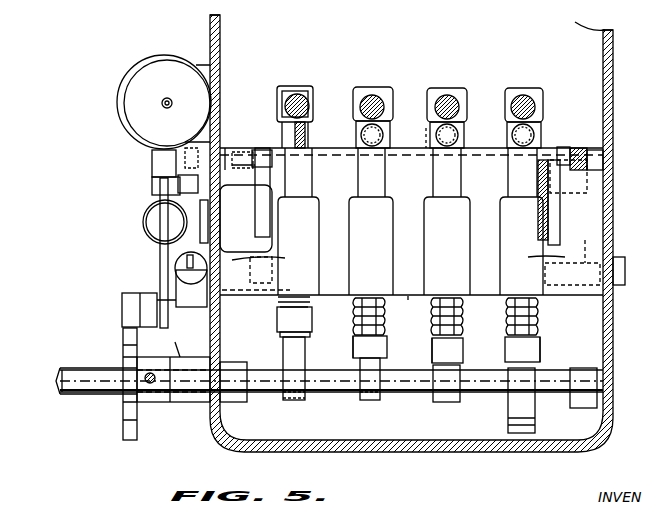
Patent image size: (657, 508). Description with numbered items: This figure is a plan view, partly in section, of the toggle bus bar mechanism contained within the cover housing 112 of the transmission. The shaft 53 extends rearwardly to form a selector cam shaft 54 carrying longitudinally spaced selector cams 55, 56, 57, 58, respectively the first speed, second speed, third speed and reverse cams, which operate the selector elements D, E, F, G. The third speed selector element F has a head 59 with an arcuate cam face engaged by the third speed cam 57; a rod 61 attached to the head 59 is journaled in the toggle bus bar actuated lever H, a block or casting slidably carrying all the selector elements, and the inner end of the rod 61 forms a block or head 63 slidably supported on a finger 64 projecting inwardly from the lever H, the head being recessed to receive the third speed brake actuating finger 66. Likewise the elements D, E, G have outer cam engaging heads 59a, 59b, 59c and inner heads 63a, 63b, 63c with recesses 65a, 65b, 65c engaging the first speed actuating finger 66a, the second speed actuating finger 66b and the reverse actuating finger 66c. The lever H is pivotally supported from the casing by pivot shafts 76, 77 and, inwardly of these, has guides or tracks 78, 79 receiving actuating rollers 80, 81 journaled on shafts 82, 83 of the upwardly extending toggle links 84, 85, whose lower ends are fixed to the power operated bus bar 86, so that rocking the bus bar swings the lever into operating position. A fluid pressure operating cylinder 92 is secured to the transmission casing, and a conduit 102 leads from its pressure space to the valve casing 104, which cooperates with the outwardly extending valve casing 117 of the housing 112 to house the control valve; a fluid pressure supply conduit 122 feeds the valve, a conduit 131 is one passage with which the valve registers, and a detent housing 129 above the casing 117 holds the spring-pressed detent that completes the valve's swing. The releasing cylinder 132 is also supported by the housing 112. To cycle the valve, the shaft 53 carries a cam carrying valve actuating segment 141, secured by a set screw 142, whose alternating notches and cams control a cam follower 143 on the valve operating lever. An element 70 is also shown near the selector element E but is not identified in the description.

The cover housing 112 is at (218, 17).
The fluid pressure operating cylinder 92 is at (118, 82).
The block or head 63 is at (290, 87).
The third speed brake actuating finger 66 is at (297, 96).
The finger 64 is at (318, 128).
The second speed actuating finger 66b is at (368, 100).
The inner block or head 63b is at (392, 100).
The recess 65b is at (362, 135).
The power operated bus bar 86 is at (413, 134).
The first speed actuating finger 66a is at (445, 100).
The inner block or head 63a is at (430, 108).
The recess 65a is at (450, 130).
The reverse actuating finger 66c is at (523, 100).
The inner block or head 63c is at (541, 122).
The recess 65c is at (532, 136).
The toggle bus bar actuated lever H is at (480, 170).
The toggle link 84 is at (580, 152).
The shaft 82 is at (614, 137).
The actuating roller 80 is at (540, 195).
The guide or track 78 is at (552, 212).
The pivot shaft 76 is at (585, 248).
The toggle link 85 is at (250, 165).
The rod 61 is at (270, 130).
The actuating roller 81 is at (243, 165).
The shaft 83 is at (262, 150).
The guide or track 79 is at (256, 200).
The pivot shaft 77 is at (240, 244).
The fluid pressure supply conduit 122 is at (290, 290).
The spring 70 is at (409, 300).
The third speed selector element F is at (312, 320).
The second speed selector element E is at (380, 328).
The first speed selector element D is at (460, 330).
The reverse selector element G is at (545, 335).
The head 59 is at (270, 322).
The outer cam engaging head 59b is at (353, 344).
The outer cam engaging head 59a is at (432, 348).
The outer cam engaging head 59c is at (540, 348).
The selector cam shaft 54 is at (410, 394).
The shaft 53 is at (80, 368).
The third speed cam 57 is at (294, 400).
The second speed cam 56 is at (368, 400).
The first speed cam 55 is at (443, 402).
The reverse cam 58 is at (536, 418).
The valve casing 104 is at (173, 372).
The valve casing 117 is at (189, 350).
The cam carrying valve actuating segment 141 is at (125, 422).
The set screw 142 is at (150, 384).
The releasing cylinder 132 is at (143, 222).
The conduit 102 is at (176, 266).
The detent housing 129 is at (183, 262).
The conduit 131 is at (165, 286).
The cam follower 143 is at (122, 306).